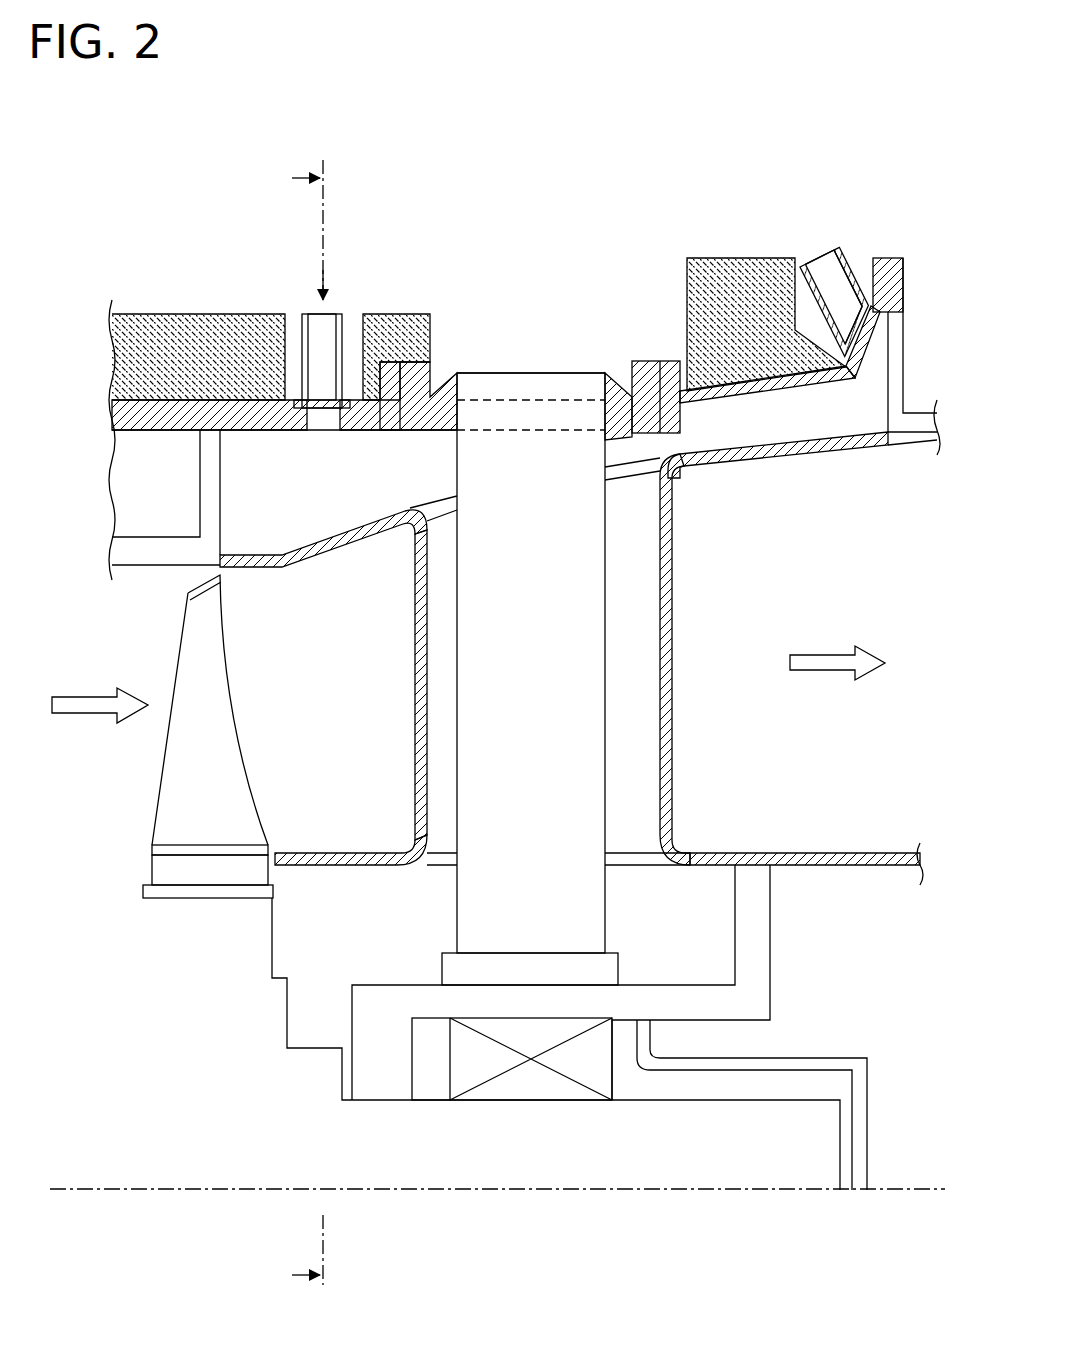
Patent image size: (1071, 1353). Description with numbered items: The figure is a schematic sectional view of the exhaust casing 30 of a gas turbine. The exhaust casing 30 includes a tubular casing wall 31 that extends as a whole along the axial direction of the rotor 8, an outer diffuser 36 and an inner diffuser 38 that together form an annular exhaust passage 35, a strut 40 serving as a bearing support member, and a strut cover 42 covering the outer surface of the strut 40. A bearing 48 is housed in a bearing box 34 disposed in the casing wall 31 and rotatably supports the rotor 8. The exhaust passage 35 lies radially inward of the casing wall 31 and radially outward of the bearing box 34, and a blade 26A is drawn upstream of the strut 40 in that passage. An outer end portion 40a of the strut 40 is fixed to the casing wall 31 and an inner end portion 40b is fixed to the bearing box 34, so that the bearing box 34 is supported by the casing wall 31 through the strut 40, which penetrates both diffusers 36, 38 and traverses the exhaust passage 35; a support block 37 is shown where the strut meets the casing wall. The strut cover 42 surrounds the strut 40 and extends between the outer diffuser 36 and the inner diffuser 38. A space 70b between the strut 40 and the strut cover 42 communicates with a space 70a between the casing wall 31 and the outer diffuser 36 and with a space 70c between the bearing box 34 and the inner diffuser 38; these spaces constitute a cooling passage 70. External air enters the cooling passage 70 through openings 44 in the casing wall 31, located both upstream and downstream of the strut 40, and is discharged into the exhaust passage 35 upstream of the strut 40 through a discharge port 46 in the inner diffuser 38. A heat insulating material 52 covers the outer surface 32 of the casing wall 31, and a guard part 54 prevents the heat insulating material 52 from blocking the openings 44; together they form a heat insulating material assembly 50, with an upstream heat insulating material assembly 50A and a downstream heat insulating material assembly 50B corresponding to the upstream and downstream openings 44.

The exhaust casing 30 is at (778, 142).
The heat insulating material assembly 50 is at (552, 296).
The upstream heat insulating material assembly 50A is at (245, 230).
The downstream heat insulating material assembly 50B is at (702, 230).
The heat insulating material 52 is at (395, 314).
The opening 44 is at (310, 314).
The guard part 54 is at (347, 314).
The outer surface 32 is at (260, 314).
The casing wall 31 is at (450, 368).
The strut 40 is at (592, 650).
The outer end portion 40a is at (540, 368).
The inner end portion 40b is at (440, 963).
The support block 37 is at (652, 445).
The outer diffuser 36 is at (800, 448).
The inner diffuser 38 is at (826, 853).
The cooling passage 70 is at (372, 491).
The space 70a is at (335, 518).
The space 70b is at (648, 555).
The space 70c is at (350, 878).
The exhaust passage 35 is at (379, 691).
The strut cover 42 is at (672, 705).
The blade 26A is at (215, 690).
The discharge port 46 is at (272, 833).
The bearing box 34 is at (632, 1000).
The bearing 48 is at (527, 1085).
The rotor 8 is at (708, 1170).